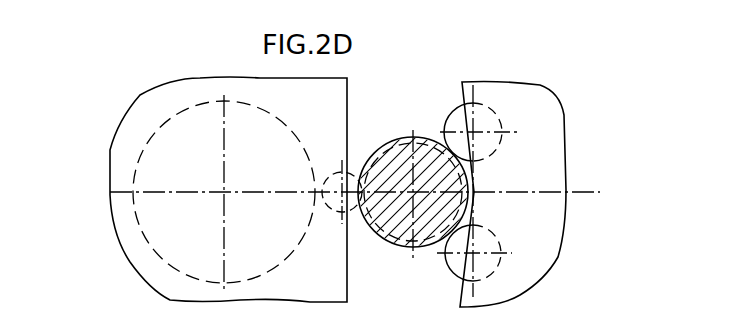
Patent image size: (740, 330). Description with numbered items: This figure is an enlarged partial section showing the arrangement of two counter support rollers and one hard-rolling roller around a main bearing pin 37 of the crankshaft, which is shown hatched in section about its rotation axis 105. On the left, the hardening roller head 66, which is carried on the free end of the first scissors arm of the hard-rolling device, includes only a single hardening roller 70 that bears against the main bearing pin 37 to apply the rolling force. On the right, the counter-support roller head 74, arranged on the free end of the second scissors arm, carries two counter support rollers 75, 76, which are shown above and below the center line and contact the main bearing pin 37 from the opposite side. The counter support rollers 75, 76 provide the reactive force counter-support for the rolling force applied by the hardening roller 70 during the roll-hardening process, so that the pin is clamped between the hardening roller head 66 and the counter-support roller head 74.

The hardening roller head 66 is at (128, 125).
The counter-support roller head 74 is at (567, 113).
The main bearing pin 37 is at (393, 156).
The hardening roller 70 is at (350, 216).
The counter support roller 76 is at (447, 126).
The counter support roller 75 is at (456, 264).
The rotation axis 105 is at (413, 195).